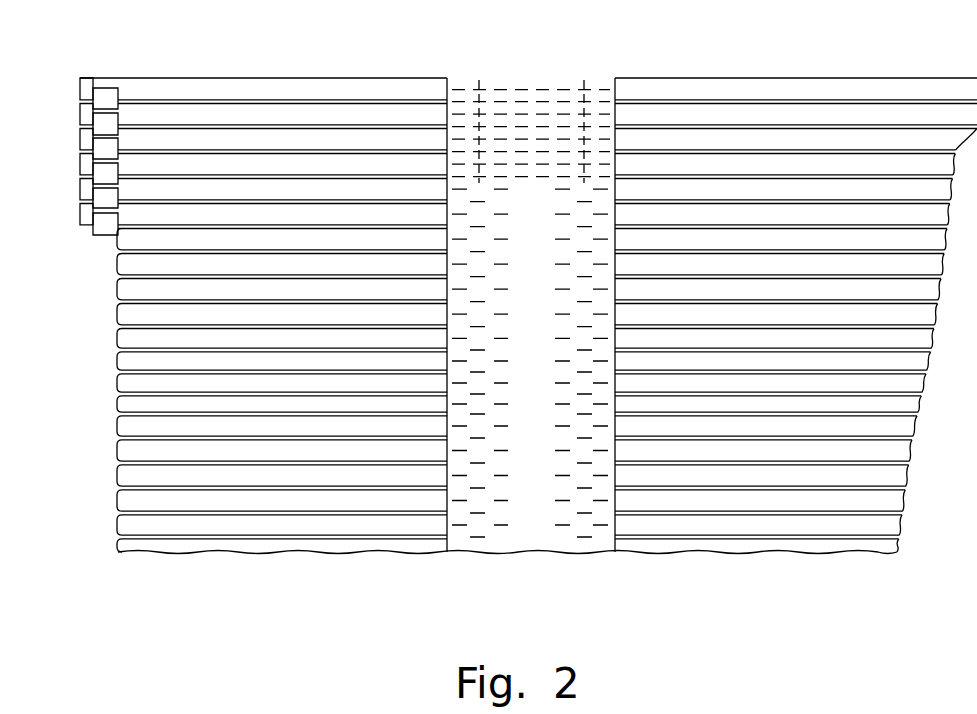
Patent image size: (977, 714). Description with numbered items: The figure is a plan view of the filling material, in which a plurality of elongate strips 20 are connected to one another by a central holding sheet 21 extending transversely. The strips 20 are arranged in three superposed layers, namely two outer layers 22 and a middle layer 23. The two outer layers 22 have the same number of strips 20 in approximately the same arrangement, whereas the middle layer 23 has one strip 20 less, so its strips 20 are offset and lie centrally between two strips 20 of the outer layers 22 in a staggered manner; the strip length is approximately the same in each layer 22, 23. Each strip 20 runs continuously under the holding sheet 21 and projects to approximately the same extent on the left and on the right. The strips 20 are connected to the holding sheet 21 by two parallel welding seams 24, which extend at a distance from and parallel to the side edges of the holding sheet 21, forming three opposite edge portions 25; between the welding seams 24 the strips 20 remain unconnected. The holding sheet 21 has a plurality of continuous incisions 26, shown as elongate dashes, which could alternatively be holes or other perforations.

The elongate strips 20 is at (86, 80).
The central holding sheet 21 is at (530, 502).
The outer layers 22 is at (73, 230).
The middle layer 23 is at (105, 250).
The welding seams 24 is at (583, 86).
The edge portions 25 is at (461, 86).
The continuous incisions 26 is at (458, 525).